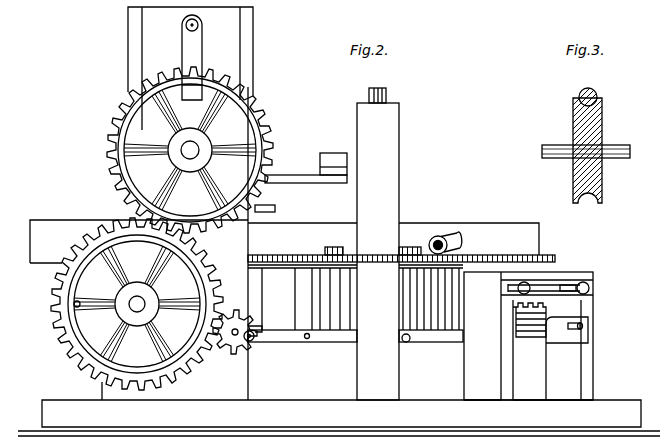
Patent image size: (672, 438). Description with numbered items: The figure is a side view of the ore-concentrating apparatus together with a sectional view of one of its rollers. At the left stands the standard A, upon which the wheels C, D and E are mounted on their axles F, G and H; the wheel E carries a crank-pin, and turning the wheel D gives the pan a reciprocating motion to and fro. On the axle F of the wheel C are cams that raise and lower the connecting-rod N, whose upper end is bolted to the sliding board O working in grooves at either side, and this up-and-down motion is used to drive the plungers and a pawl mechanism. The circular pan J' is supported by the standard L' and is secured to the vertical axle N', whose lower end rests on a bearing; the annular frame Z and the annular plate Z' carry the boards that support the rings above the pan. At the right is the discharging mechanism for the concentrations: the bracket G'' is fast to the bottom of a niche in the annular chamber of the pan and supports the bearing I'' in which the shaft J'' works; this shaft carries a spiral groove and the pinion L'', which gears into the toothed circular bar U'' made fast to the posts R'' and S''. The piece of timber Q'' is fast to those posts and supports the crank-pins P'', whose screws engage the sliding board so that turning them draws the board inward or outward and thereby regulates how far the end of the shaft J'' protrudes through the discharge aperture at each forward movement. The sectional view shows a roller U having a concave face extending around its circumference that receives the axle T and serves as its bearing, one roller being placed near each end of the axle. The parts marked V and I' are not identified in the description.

In FIG. 2, the sliding board O is at (190, 68).
In FIG. 2, the connecting-rod N is at (190, 57).
In FIG. 2, the standard A is at (339, 261).
In FIG. 2, the wheel C is at (194, 150).
In FIG. 2, the axle F is at (190, 150).
In FIG. 2, the wheel D is at (129, 304).
In FIG. 2, the axle G is at (137, 304).
In FIG. 2, the axle H is at (235, 332).
In FIG. 2, the wheel E is at (257, 319).
In FIG. 2, the bar V is at (301, 185).
In FIG. 2, the annular frame Z is at (333, 163).
In FIG. 2, the standard L' is at (378, 251).
In FIG. 2, the vertical axle N' is at (387, 94).
In FIG. 2, the annular plate Z' is at (404, 257).
In FIG. 2, the pan J' is at (353, 305).
In FIG. 2, the roller I' is at (438, 241).
In FIG. 2, the piece of timber Q'' is at (528, 336).
In FIG. 2, the post S'' is at (482, 374).
In FIG. 2, the crank-pins P'' is at (550, 287).
In FIG. 2, the bar U'' is at (588, 296).
In FIG. 2, the pinion L'' is at (547, 350).
In FIG. 2, the bearing I'' is at (567, 358).
In FIG. 2, the shaft J'' is at (589, 319).
In FIG. 2, the bracket G'' is at (529, 374).
In FIG. 2, the post R'' is at (569, 374).
In FIG. 3, the roller U is at (586, 150).
In FIG. 3, the axle T is at (591, 92).